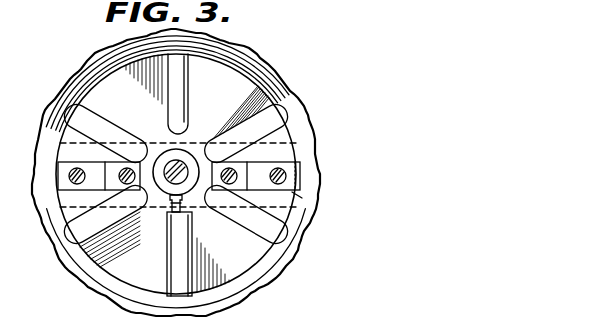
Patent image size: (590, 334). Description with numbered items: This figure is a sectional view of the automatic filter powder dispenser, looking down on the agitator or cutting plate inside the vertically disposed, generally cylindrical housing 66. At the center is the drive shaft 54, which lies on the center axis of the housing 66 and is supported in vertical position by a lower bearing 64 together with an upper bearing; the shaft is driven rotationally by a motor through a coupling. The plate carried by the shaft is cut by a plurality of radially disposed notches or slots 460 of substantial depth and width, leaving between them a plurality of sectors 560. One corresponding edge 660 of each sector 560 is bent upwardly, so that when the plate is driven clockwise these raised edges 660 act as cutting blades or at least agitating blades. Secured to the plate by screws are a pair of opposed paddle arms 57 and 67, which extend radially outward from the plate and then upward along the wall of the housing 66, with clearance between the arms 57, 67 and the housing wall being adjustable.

The sectors 560 is at (308, 130).
The notches or slots 460 is at (183, 107).
The raised edge 660 is at (250, 167).
The drive shaft 54 is at (179, 163).
The paddle arm 57 is at (110, 202).
The lower bearing 64 is at (92, 178).
The housing 66 is at (326, 112).
The paddle arm 67 is at (292, 192).